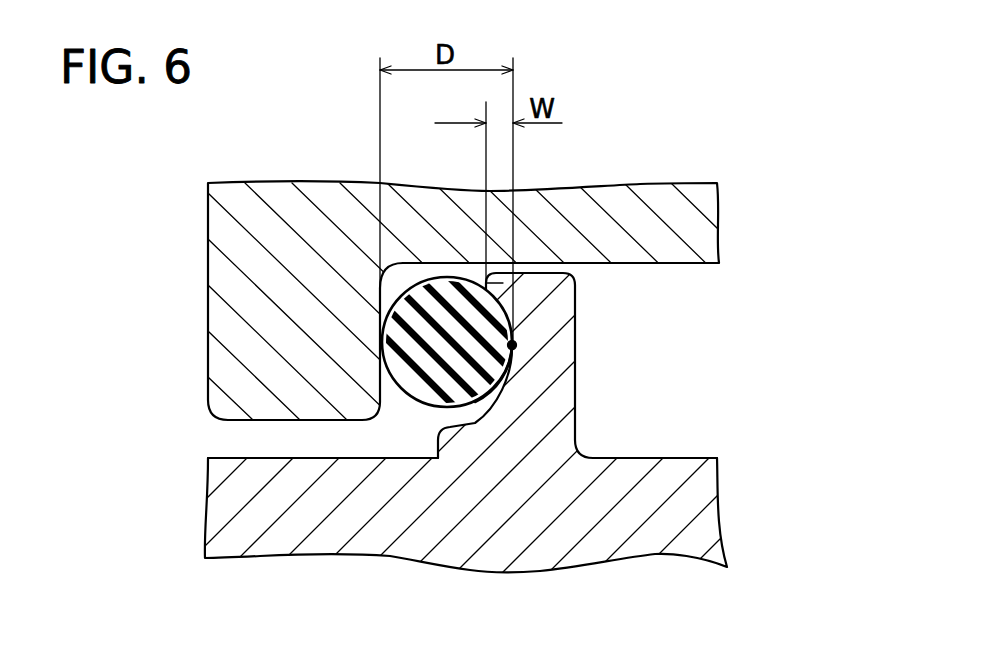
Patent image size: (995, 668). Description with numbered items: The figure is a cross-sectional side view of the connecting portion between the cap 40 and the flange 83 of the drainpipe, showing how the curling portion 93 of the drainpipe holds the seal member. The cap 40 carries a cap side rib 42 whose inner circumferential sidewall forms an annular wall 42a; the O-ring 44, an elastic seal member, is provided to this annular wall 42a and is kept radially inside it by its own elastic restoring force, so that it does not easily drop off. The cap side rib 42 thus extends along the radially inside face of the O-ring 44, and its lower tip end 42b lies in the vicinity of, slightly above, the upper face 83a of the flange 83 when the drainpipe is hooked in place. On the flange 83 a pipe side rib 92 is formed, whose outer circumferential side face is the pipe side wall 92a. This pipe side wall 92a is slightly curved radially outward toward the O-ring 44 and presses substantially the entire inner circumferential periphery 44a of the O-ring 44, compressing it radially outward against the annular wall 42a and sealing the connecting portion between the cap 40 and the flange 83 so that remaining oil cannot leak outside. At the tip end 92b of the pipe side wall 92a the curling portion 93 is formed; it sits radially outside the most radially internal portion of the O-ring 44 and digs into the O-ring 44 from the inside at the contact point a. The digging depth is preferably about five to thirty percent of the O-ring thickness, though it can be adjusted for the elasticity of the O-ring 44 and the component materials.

The cap 40 is at (381, 389).
The cap side rib 42 is at (407, 389).
The annular wall 42a is at (385, 307).
The bottom surface of seal body 42b is at (357, 422).
The O-ring 44 is at (497, 454).
The inner circumferential periphery 44a is at (508, 358).
The contact point a is at (516, 345).
The flange 83 is at (477, 494).
The upper face 83a is at (233, 457).
The pipe side rib 92 is at (477, 441).
The pipe side wall 92a is at (440, 427).
The tip end 92b is at (553, 266).
The curling portion 93 is at (502, 283).